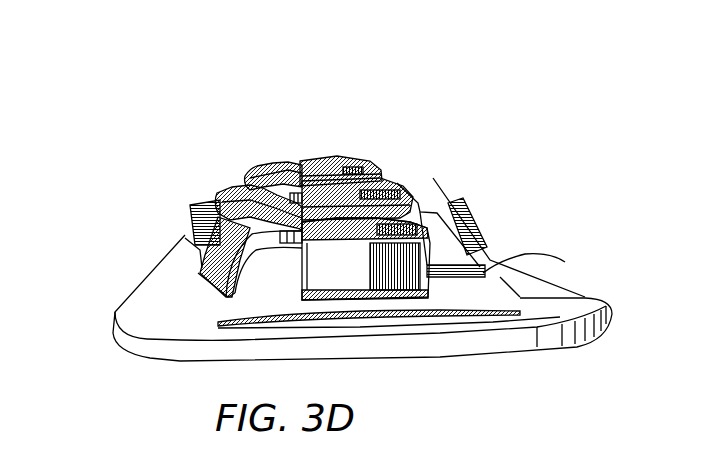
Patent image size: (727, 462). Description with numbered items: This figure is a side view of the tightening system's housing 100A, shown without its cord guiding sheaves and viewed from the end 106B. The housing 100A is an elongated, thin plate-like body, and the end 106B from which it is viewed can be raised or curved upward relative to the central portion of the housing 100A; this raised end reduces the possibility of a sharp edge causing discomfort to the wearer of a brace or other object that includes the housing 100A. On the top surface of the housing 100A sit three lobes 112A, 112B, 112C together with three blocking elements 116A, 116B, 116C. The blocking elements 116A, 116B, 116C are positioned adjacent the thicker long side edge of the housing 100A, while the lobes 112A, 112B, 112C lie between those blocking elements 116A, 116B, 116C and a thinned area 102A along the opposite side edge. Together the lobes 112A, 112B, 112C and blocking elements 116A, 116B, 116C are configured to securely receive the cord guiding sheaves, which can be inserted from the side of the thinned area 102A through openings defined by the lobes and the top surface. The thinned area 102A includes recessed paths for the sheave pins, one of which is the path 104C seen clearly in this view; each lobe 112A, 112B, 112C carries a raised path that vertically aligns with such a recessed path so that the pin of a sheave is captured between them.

The housing 100A is at (133, 293).
The thinned area 102A is at (488, 237).
The path for sheave pin 104C is at (517, 260).
The end 106B is at (508, 342).
The lobe 112A is at (342, 156).
The lobe 112B is at (388, 180).
The lobe 112C is at (427, 200).
The blocking element 116A is at (272, 163).
The blocking element 116B is at (237, 210).
The blocking element 116C is at (210, 252).